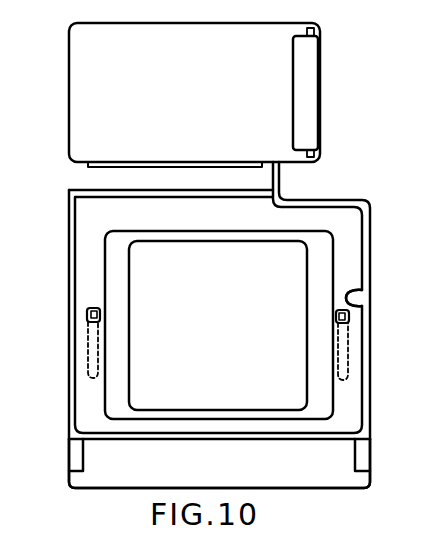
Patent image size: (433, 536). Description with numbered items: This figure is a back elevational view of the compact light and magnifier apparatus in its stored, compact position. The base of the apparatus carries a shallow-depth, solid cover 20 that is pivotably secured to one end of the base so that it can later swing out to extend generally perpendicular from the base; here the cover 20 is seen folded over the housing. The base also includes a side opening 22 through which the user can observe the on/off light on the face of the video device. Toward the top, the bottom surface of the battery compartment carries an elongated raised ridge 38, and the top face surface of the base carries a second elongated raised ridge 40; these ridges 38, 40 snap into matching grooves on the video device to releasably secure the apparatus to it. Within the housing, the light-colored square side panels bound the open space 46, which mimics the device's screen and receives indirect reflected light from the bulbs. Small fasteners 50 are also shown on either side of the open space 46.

The cover 20 is at (217, 481).
The side opening 22 is at (358, 298).
The elongated raised ridge 38 is at (88, 163).
The elongated raised ridge 40 is at (69, 194).
The open space 46 is at (287, 404).
The fastener 50 is at (87, 352).